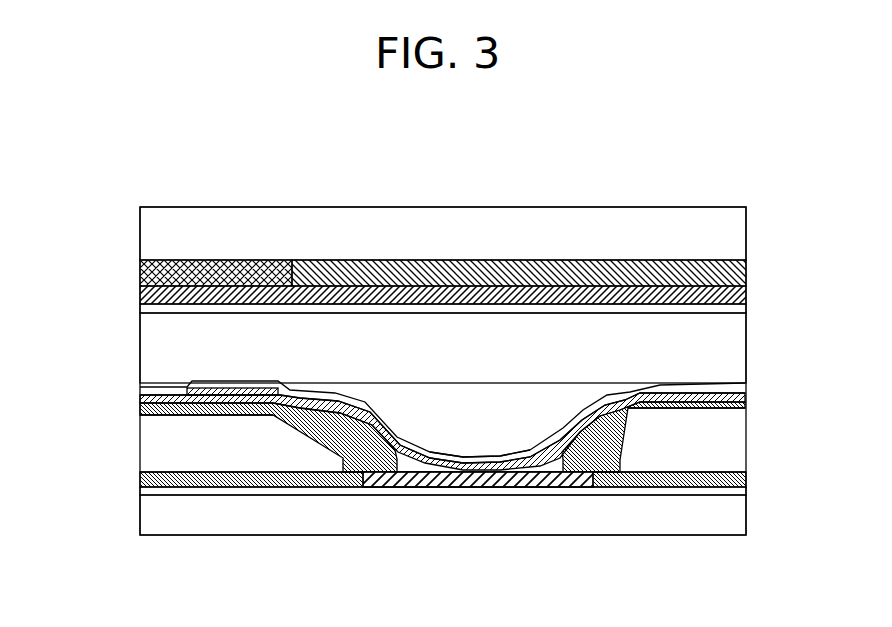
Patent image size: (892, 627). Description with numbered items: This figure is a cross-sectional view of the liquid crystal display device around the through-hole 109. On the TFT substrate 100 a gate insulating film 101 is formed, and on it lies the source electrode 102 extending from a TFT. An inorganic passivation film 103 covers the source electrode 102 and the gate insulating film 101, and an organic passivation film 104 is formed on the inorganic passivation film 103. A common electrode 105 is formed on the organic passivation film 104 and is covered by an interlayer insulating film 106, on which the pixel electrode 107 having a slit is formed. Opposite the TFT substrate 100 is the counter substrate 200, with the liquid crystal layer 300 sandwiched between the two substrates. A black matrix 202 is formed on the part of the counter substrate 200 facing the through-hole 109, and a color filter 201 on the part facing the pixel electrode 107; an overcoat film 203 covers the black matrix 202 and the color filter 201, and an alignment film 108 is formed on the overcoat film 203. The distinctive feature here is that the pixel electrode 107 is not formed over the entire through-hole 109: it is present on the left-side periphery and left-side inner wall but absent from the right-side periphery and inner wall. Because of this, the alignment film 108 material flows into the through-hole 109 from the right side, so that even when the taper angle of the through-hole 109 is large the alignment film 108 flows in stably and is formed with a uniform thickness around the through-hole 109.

The TFT substrate 100 is at (705, 535).
The gate insulating film 101 is at (720, 495).
The source electrode 102 is at (548, 488).
The inorganic passivation film 103 is at (718, 487).
The organic passivation film 104 is at (163, 448).
The common electrode 105 is at (157, 415).
The interlayer insulating film 106 is at (150, 400).
The pixel electrode 107 is at (222, 383).
The alignment film 108 is at (728, 312).
The through-hole 109 is at (476, 440).
The counter substrate 200 is at (730, 236).
The color filter 201 is at (244, 260).
The black matrix 202 is at (520, 260).
The overcoat film 203 is at (730, 297).
The liquid crystal layer 300 is at (730, 353).